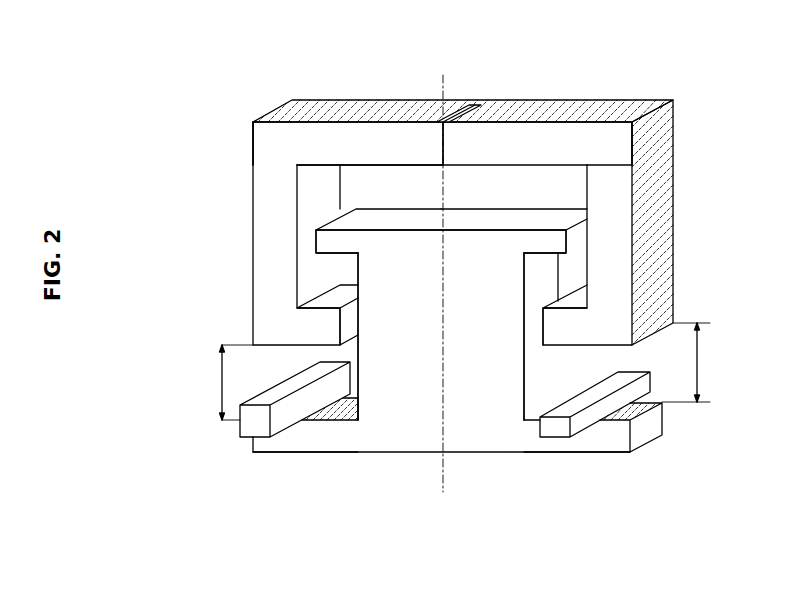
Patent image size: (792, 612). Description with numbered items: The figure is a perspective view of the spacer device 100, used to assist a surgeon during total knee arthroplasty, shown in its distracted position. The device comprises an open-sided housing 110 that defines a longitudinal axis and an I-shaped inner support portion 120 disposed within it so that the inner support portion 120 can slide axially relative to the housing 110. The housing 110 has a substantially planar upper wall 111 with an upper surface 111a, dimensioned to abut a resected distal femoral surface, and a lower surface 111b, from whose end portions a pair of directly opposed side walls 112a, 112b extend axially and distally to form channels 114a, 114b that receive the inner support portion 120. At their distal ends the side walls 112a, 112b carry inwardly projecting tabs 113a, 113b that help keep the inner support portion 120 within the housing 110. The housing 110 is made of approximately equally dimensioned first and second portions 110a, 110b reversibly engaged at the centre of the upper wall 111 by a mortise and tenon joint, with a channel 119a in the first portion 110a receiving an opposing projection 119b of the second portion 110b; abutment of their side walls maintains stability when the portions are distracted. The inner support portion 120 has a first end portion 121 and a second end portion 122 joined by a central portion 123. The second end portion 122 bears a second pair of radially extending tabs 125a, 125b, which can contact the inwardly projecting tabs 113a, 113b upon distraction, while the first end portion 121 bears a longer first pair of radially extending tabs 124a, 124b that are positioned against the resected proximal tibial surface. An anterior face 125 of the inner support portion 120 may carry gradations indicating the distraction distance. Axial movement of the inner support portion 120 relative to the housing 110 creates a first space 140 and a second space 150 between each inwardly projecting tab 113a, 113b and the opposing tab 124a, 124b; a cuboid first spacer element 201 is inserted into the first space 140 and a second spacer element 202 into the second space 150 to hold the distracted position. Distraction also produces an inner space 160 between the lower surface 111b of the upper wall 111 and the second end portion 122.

The spacer device 100 is at (196, 82).
The housing 110 is at (668, 86).
The first portion 110a is at (296, 106).
The second portion 110b is at (611, 108).
The upper wall 111 is at (392, 140).
The upper surface 111a is at (365, 108).
The lower surface 111b is at (470, 160).
The channel 119a is at (441, 117).
The projection 119b is at (452, 114).
The side wall 112a is at (275, 207).
The side wall 112b is at (613, 197).
The inwardly projecting tab 113a is at (315, 332).
The inwardly projecting tab 113b is at (608, 325).
The channel 114a is at (300, 243).
The channel 114b is at (545, 240).
The inner space 160 is at (398, 188).
The inner support portion 120 is at (675, 469).
The first end portion 121 is at (430, 440).
The second end portion 122 is at (458, 237).
The central portion 123 is at (458, 320).
The radially extending tab 124a is at (283, 445).
The radially extending tab 124b is at (620, 427).
The anterior face 125 is at (470, 360).
The radially extending tab 125a is at (340, 237).
The radially extending tab 125b is at (578, 237).
The first space 140 is at (218, 380).
The second space 150 is at (698, 363).
The first spacer element 201 is at (312, 403).
The second spacer element 202 is at (597, 415).